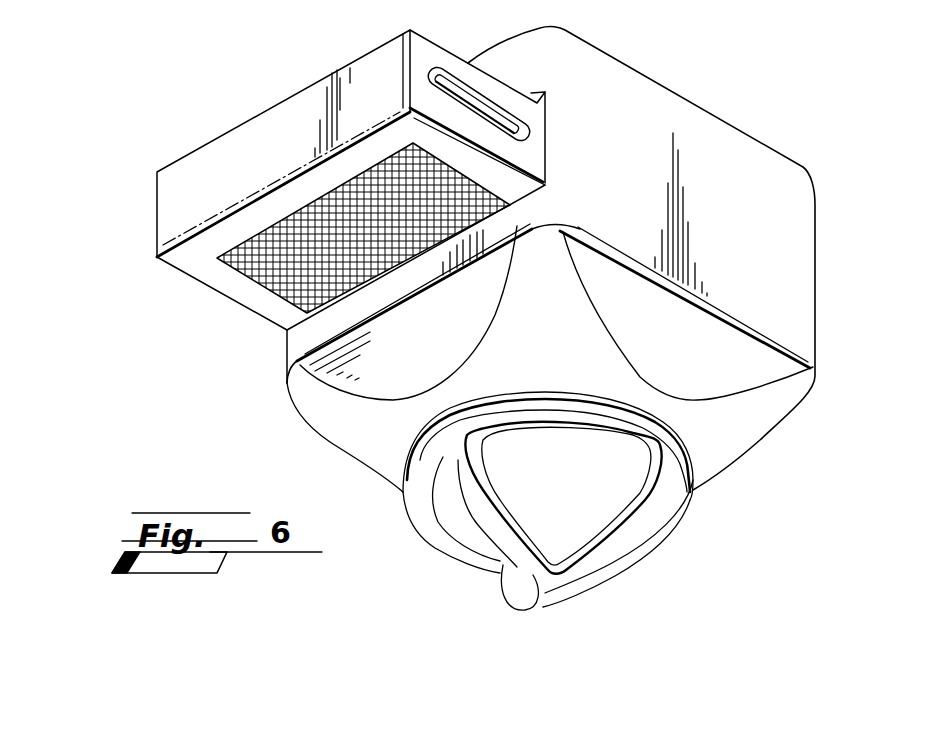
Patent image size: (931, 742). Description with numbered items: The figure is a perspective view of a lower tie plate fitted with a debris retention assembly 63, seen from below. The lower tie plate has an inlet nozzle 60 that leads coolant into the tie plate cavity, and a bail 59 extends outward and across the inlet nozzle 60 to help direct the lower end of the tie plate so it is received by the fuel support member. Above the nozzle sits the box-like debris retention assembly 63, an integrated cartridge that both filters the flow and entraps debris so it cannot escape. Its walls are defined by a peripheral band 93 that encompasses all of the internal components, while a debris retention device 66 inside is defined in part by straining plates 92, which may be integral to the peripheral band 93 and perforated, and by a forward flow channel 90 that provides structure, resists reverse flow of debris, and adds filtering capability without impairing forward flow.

The bail 59 is at (613, 553).
The inlet nozzle 60 is at (463, 517).
The debris retention assembly 63 is at (278, 78).
The debris retention device 66 is at (150, 261).
The forward flow channel 90 is at (274, 278).
The straining plates 92 is at (233, 293).
The peripheral band 93 is at (195, 152).